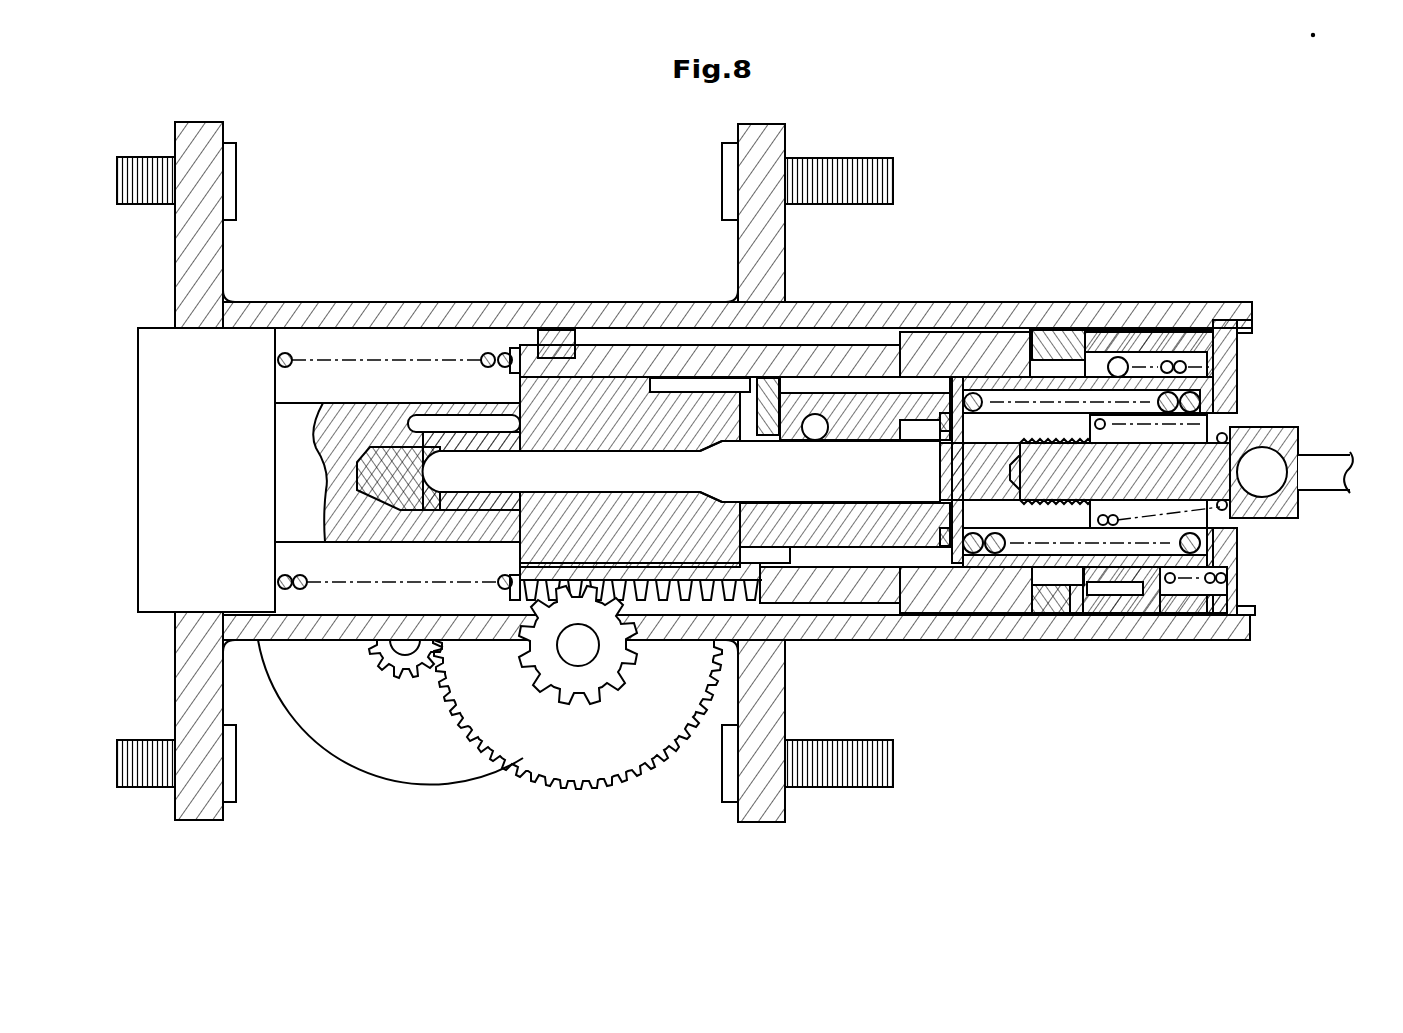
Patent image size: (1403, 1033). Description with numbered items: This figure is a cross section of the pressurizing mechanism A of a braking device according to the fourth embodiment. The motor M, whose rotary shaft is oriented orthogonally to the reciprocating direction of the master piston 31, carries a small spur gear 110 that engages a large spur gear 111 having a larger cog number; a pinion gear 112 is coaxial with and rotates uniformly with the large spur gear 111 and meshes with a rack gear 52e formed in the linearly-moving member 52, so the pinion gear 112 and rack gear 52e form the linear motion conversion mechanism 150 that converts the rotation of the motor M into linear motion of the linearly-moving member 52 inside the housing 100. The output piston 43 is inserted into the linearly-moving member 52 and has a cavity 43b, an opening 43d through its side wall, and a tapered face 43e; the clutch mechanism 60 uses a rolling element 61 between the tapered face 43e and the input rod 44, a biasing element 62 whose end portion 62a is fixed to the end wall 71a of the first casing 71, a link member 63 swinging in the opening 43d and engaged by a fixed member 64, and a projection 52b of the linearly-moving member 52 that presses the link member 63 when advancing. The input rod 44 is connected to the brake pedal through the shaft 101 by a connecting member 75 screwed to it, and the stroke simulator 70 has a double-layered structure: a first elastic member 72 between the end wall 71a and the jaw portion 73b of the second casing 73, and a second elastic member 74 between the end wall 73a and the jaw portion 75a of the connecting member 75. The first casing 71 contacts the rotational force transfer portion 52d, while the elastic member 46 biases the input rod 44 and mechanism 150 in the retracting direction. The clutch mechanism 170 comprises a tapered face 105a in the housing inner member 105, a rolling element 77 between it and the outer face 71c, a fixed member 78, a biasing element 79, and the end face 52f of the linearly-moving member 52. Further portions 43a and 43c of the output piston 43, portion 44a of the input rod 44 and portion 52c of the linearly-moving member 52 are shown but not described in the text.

The master piston 31 is at (150, 355).
The elastic member 46 is at (290, 354).
The housing 100 is at (440, 302).
The sleeve projection 43a is at (633, 390).
The output piston 43 is at (680, 400).
The clutch mechanism 60 is at (755, 368).
The projection 52b is at (788, 392).
The linearly-moving member 52 is at (920, 350).
The first elastic member 72 is at (975, 330).
The end wall 73a is at (1040, 330).
The clutch mechanism 170 is at (1100, 340).
The rolling element 77 is at (1115, 340).
The fixed member 78 is at (1160, 340).
The biasing element 79 is at (1205, 335).
The outer face 71c is at (1237, 340).
The jaw portion 73b is at (1235, 398).
The shaft 101 is at (1325, 462).
The sleeve base portion 43c is at (437, 437).
The opening 43d is at (683, 471).
The link member 63 is at (760, 438).
The rolling element 61 is at (812, 440).
The tapered face 43e is at (840, 440).
The fixed member 64 is at (880, 420).
The connecting member 75 is at (1050, 452).
The jaw portion 75a is at (1210, 425).
The second elastic member 74 is at (1087, 523).
The stroke simulator 70 is at (1228, 510).
The cavity 43b is at (450, 483).
The screw shaft head 44a is at (503, 487).
The rack gear 52e is at (697, 593).
The cylinder wall portion 52c is at (823, 565).
The rotational force transfer portion 52d is at (900, 566).
The end portion 62a is at (943, 566).
The biasing element 62 is at (931, 570).
The end wall 71a is at (965, 566).
The first casing 71 is at (1000, 568).
The input rod 44 is at (1035, 605).
The end face 52f is at (1075, 612).
The housing inner member 105 is at (1148, 613).
The tapered face 105a is at (1140, 612).
The second casing 73 is at (1200, 615).
The small spur gear 110 is at (372, 660).
The pinion gear 112 is at (558, 672).
The large spur gear 111 is at (525, 768).
The linear motion conversion mechanism 150 is at (641, 712).
The motor M is at (340, 772).
The pressurizing mechanism A is at (1186, 159).